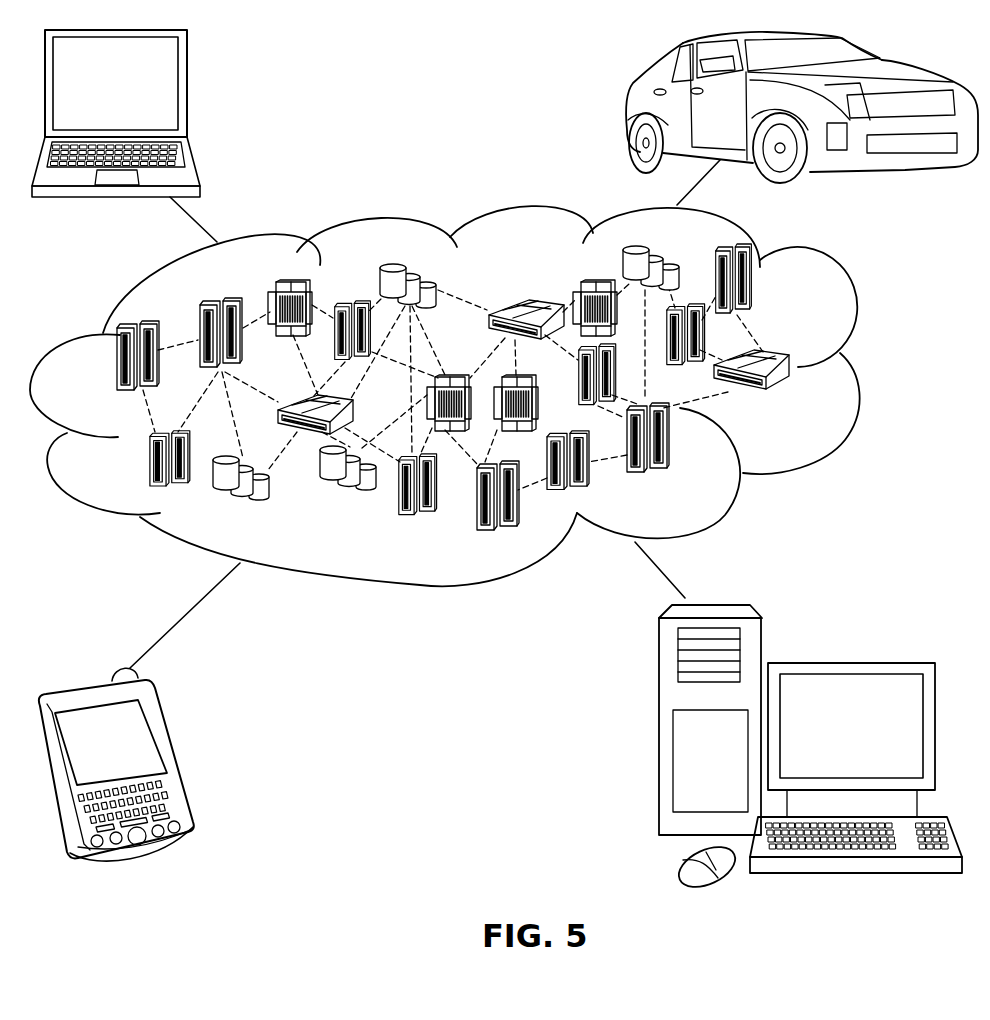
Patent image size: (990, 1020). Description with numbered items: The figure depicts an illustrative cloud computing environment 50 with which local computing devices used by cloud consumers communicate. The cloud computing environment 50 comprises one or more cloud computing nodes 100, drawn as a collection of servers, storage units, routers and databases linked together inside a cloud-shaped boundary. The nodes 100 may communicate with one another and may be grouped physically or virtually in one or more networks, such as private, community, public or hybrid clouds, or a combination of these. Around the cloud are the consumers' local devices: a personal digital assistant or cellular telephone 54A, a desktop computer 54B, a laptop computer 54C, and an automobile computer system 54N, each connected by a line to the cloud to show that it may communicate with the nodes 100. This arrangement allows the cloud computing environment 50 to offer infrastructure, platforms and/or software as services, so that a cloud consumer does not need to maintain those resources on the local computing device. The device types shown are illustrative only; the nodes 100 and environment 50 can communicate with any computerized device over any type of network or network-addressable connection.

The laptop computer 54C is at (186, 93).
The automobile computer system 54N is at (627, 110).
The personal digital assistant (PDA) or cellular telephone 54A is at (175, 758).
The desktop computer 54B is at (851, 662).
The cloud computing environment 50 is at (853, 367).
The cloud computing nodes 100 is at (800, 400).